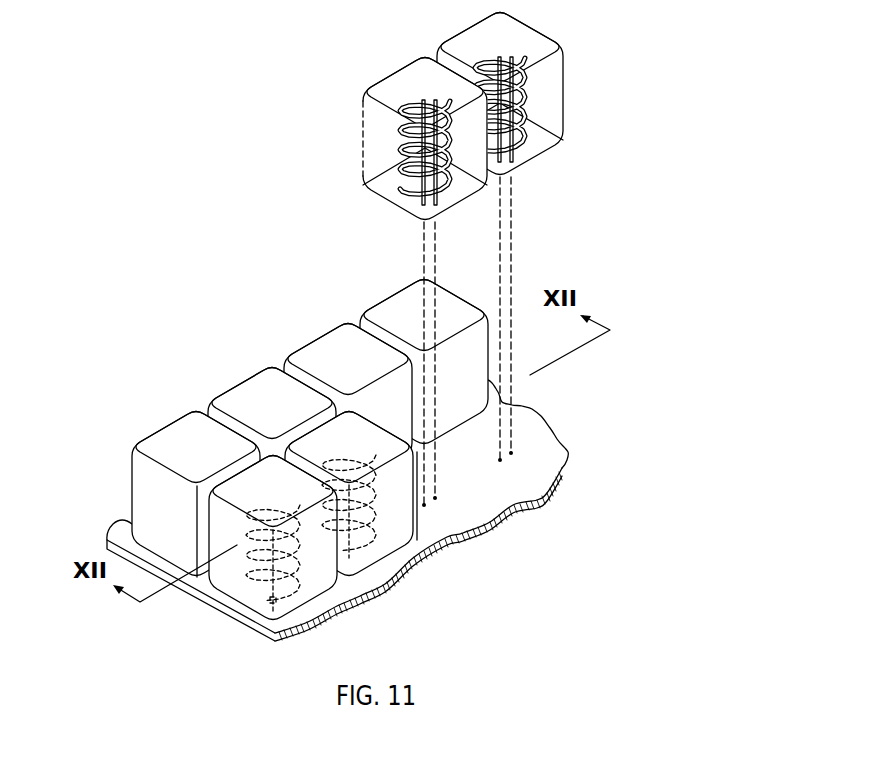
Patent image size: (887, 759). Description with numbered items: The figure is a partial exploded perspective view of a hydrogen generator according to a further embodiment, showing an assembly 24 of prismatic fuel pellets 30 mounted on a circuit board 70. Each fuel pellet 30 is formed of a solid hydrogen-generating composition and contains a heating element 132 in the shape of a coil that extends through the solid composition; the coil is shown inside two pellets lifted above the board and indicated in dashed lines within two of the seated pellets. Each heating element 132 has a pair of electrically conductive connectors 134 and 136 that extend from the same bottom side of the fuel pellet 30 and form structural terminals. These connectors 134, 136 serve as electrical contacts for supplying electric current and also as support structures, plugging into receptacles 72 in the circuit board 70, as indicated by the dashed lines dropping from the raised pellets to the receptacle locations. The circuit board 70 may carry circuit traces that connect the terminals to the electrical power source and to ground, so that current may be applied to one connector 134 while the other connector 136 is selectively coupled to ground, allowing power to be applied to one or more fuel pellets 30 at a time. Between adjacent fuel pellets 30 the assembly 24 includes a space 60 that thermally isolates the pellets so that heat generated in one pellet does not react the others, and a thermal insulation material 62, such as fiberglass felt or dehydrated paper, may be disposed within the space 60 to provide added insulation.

The assembly 24 is at (324, 338).
The fuel pellet 30 is at (182, 440).
The space 60 is at (372, 322).
The thermal insulation material 62 is at (207, 405).
The circuit board 70 is at (552, 448).
The receptacles 72 is at (424, 505).
The heating element 132 is at (445, 118).
The electrically conductive connector 134 is at (424, 204).
The electrically conductive connector 136 is at (437, 204).